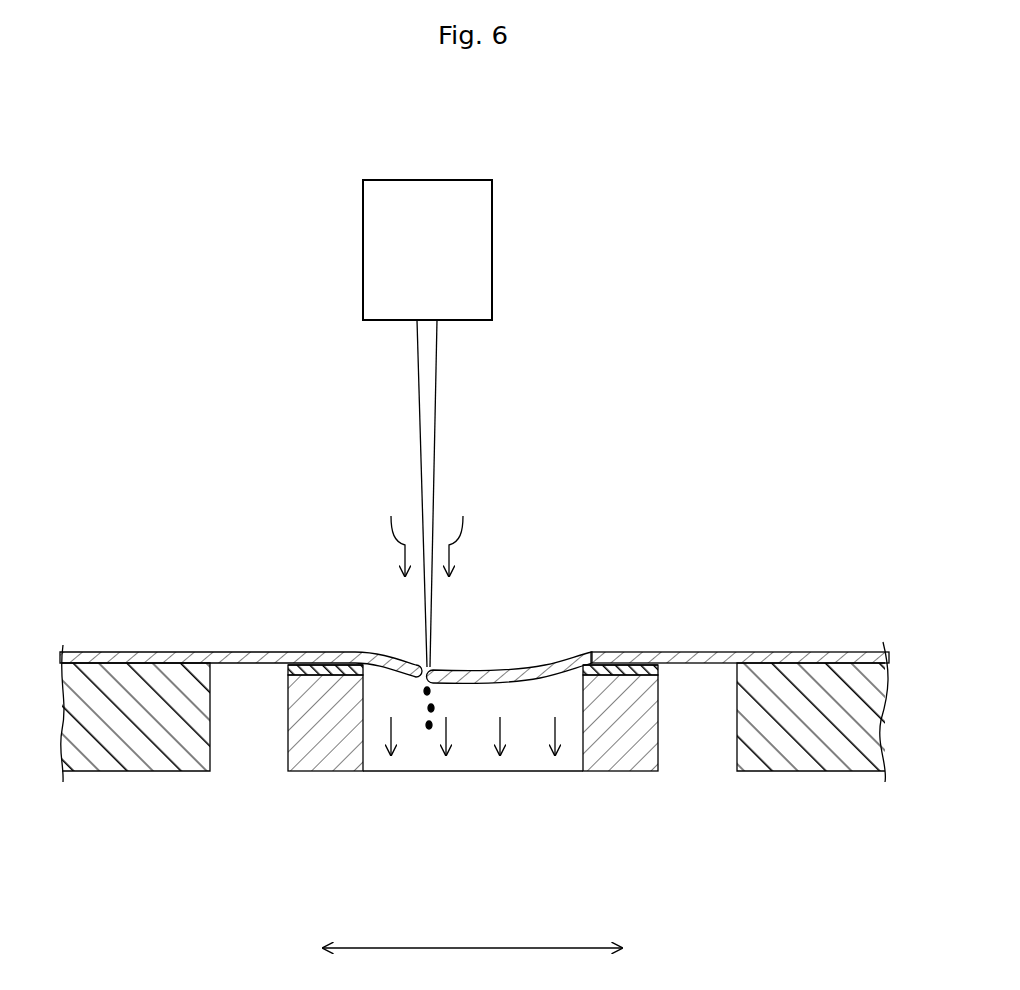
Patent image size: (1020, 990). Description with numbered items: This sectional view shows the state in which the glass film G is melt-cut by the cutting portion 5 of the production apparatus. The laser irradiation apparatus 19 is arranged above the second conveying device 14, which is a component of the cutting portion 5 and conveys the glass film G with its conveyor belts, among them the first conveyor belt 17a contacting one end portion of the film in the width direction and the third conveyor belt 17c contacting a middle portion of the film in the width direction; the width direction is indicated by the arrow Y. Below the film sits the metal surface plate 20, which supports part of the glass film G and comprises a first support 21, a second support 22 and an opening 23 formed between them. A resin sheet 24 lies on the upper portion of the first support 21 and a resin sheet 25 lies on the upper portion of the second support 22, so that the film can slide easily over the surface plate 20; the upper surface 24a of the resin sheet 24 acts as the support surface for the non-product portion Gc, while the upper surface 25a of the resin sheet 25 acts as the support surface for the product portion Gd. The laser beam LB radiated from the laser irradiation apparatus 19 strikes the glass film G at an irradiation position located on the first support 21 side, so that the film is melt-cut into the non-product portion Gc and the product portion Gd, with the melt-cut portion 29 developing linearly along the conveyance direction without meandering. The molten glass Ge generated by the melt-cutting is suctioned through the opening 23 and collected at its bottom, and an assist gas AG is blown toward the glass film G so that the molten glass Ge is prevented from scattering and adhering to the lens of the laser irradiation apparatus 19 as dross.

The cutting portion 5 is at (591, 199).
The laser irradiation apparatus 19 is at (492, 250).
The laser beam LB is at (435, 402).
The assist gas AG is at (426, 531).
The melt-cut portion 29 is at (437, 646).
The glass film G is at (474, 626).
The non-product portion Gc is at (281, 652).
The product portion Gd is at (776, 659).
The opening 23 is at (574, 686).
The resin sheet 24 is at (340, 663).
The upper surface 24a is at (318, 662).
The resin sheet 25 is at (631, 667).
The upper surface 25a is at (609, 660).
The first conveyor belt 17a is at (137, 768).
The third conveyor belt 17c is at (783, 766).
The first support 21 is at (298, 738).
The second support 22 is at (640, 748).
The surface plate 20 is at (323, 780).
The second conveying device 14 is at (829, 783).
The molten glass Ge is at (426, 729).
The Y direction Y is at (472, 932).